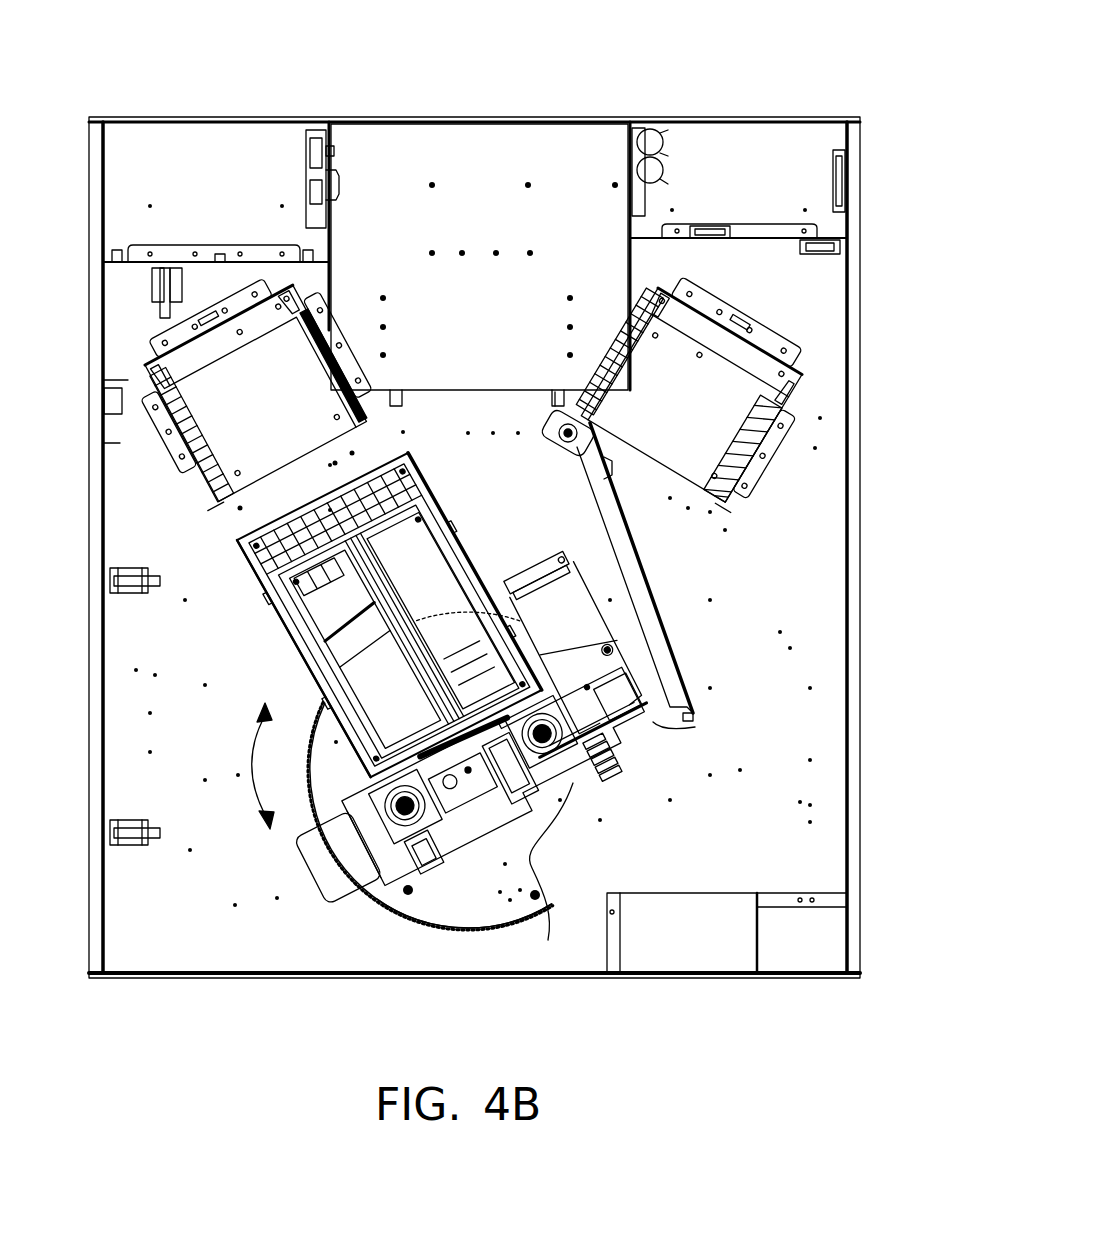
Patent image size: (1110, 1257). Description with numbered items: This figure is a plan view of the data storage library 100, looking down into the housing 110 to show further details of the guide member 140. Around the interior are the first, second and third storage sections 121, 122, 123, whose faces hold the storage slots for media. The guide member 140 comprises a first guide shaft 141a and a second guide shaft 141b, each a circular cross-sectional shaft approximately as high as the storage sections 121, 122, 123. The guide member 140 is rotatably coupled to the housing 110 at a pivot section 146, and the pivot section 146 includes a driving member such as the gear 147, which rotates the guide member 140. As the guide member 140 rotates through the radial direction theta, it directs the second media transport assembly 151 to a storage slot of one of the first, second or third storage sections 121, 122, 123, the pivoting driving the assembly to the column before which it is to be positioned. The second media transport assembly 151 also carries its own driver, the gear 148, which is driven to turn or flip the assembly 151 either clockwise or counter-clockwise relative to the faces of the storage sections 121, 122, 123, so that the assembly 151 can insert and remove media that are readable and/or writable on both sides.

The data storage library 100 is at (697, 74).
The housing 110 is at (183, 960).
The first storage section 121 is at (283, 424).
The second storage section 122 is at (497, 345).
The third storage section 123 is at (705, 424).
The guide member 140 is at (450, 823).
The first guide shaft 141a is at (388, 822).
The second guide shaft 141b is at (603, 765).
The pivot section 146 is at (577, 838).
The gear 147 is at (513, 908).
The gear 148 is at (617, 637).
The second media transport assembly 151 is at (317, 608).